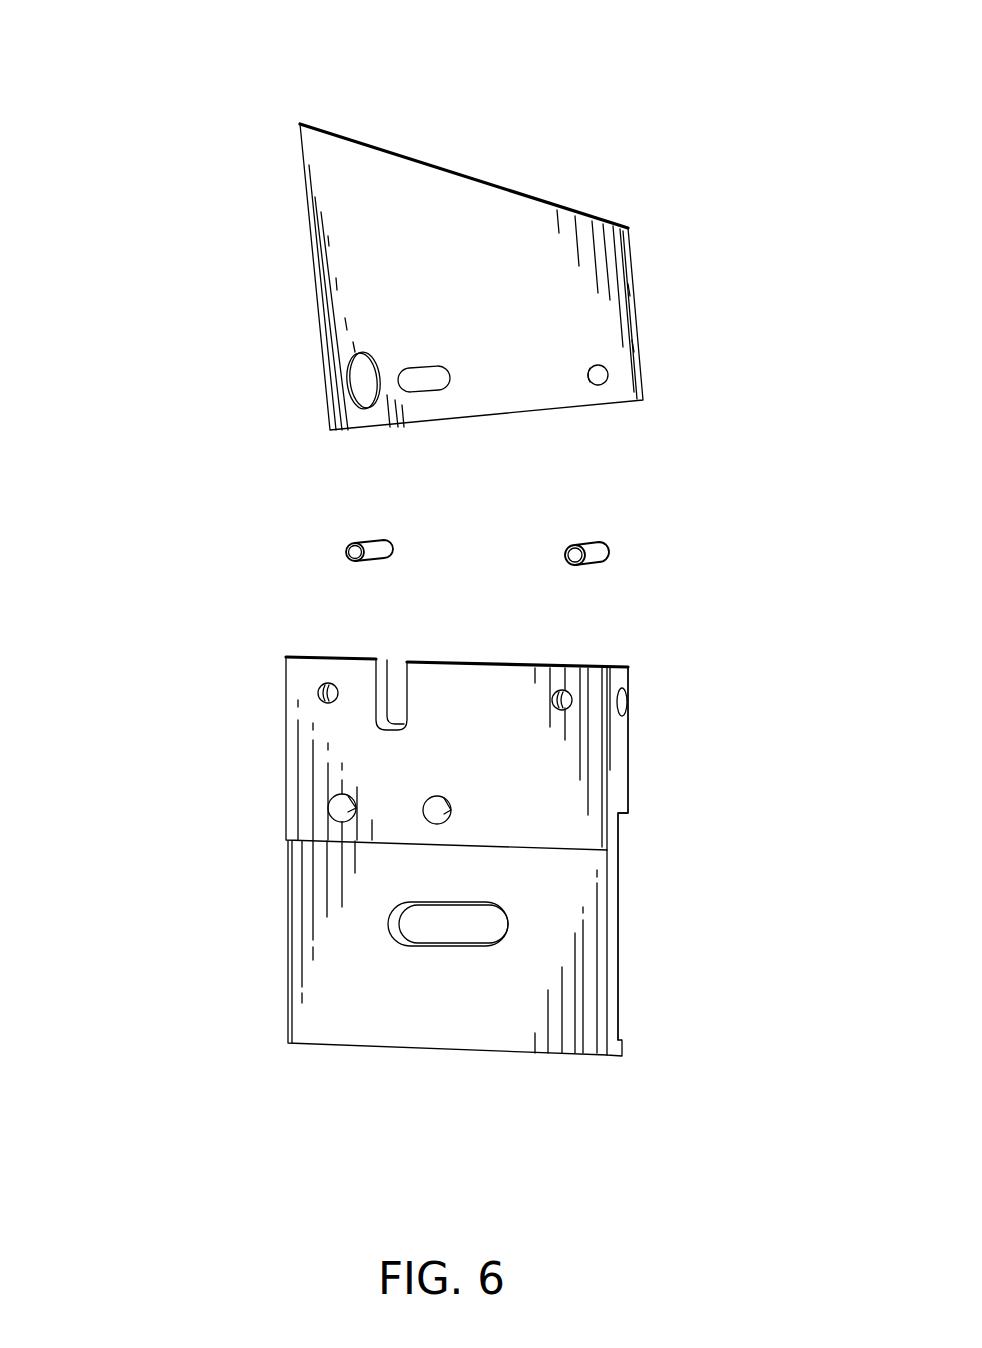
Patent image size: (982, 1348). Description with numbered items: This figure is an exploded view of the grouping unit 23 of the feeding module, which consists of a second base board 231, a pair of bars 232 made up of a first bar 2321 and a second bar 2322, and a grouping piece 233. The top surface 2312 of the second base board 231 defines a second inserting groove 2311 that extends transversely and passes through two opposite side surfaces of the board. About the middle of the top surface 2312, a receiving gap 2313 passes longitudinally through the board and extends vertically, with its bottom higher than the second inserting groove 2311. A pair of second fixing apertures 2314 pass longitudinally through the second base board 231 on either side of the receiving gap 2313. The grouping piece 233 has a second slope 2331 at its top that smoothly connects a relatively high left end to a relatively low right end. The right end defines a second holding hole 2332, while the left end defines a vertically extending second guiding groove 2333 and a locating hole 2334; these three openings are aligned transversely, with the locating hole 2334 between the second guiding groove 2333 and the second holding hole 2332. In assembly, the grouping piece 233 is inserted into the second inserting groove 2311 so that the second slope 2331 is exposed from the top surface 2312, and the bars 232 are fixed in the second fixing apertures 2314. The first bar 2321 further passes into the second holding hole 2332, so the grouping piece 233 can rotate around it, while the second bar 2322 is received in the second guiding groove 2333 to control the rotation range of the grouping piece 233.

The grouping unit 23 is at (100, 22).
The second base board 231 is at (672, 855).
The second inserting groove 2311 is at (612, 748).
The top surface 2312 is at (305, 657).
The receiving gap 2313 is at (397, 683).
The second fixing apertures 2314 is at (322, 692).
The bars 232 is at (620, 508).
The first bar 2321 is at (597, 556).
The second bar 2322 is at (375, 543).
The grouping piece 233 is at (697, 323).
The second slope 2331 is at (440, 168).
The second holding hole 2332 is at (592, 381).
The second guiding groove 2333 is at (368, 380).
The locating hole 2334 is at (425, 372).